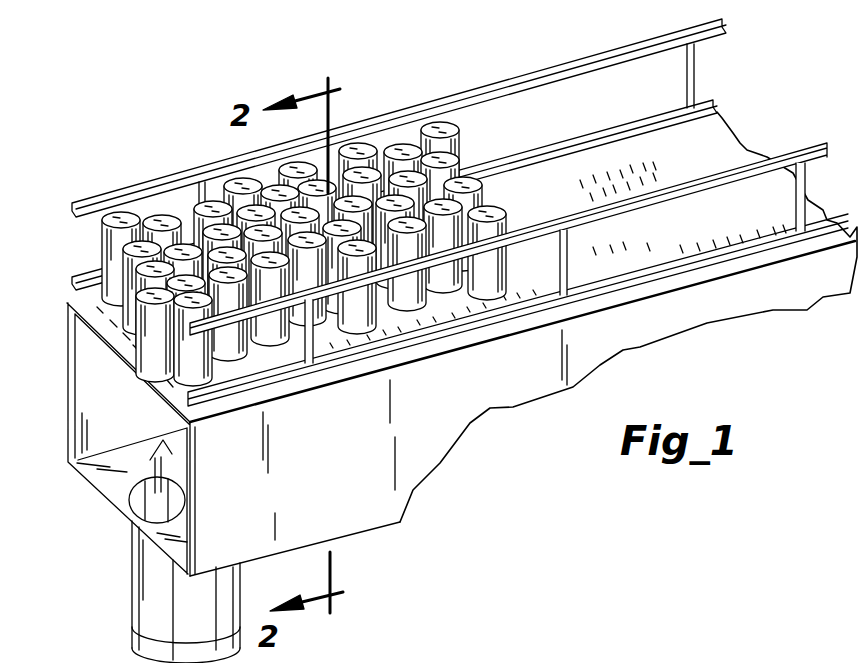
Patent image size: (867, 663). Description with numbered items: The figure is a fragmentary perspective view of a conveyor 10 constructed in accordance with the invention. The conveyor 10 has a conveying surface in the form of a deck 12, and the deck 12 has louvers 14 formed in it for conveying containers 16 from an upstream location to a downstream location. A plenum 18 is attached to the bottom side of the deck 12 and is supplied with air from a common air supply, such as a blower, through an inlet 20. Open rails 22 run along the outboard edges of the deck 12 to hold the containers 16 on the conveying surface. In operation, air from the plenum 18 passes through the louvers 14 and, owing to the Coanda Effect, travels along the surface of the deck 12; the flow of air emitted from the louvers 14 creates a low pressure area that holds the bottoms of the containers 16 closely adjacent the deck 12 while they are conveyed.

The conveyor 10 is at (405, 87).
The deck 12 is at (713, 140).
The louvers 14 is at (480, 307).
The containers 16 is at (405, 146).
The plenum 18 is at (118, 488).
The inlet 20 is at (133, 593).
The open rails 22 is at (560, 66).